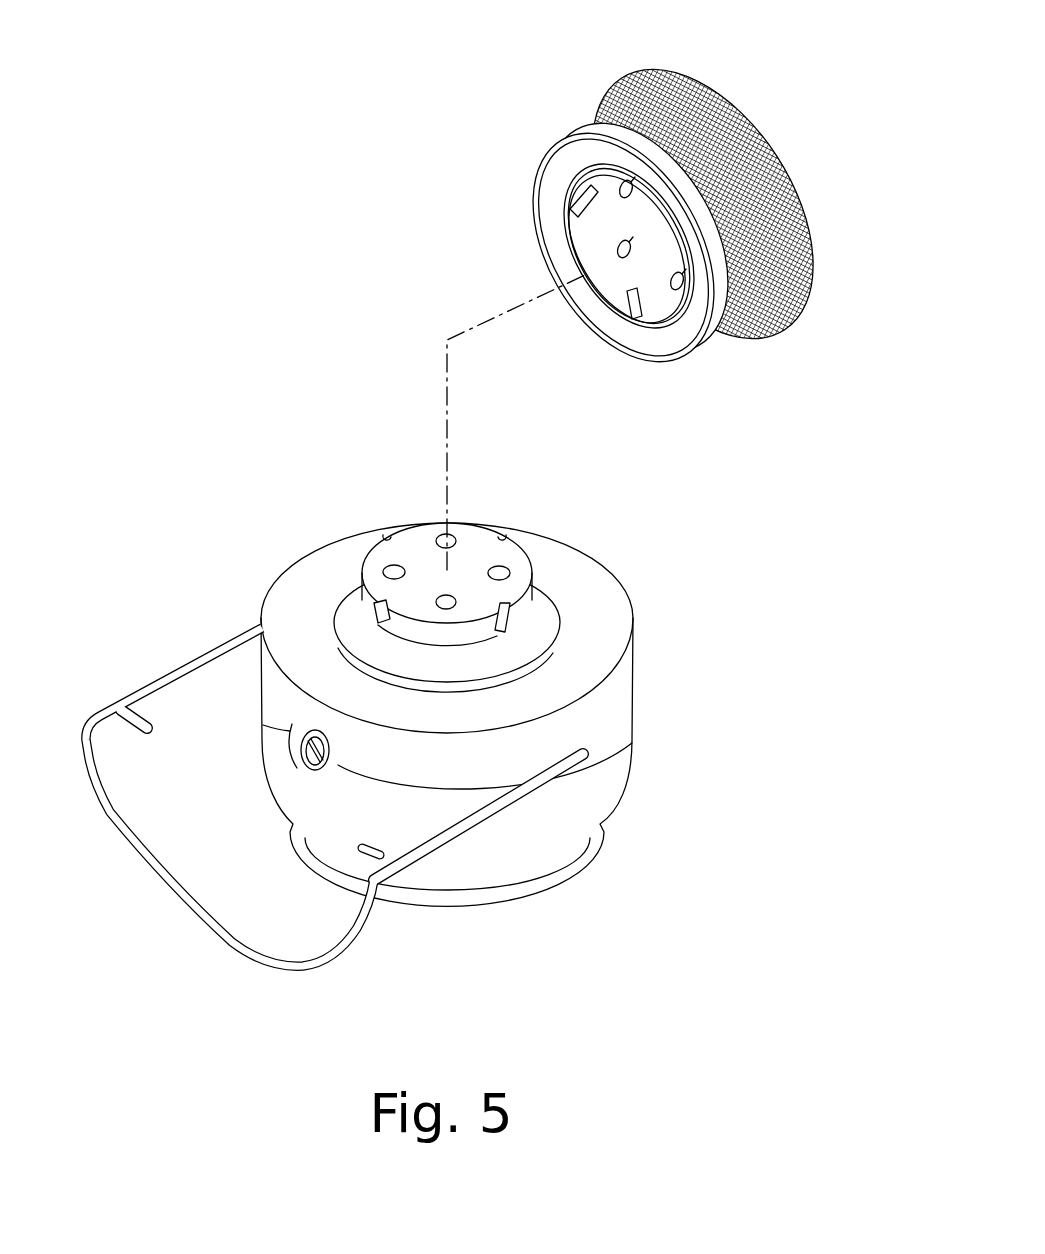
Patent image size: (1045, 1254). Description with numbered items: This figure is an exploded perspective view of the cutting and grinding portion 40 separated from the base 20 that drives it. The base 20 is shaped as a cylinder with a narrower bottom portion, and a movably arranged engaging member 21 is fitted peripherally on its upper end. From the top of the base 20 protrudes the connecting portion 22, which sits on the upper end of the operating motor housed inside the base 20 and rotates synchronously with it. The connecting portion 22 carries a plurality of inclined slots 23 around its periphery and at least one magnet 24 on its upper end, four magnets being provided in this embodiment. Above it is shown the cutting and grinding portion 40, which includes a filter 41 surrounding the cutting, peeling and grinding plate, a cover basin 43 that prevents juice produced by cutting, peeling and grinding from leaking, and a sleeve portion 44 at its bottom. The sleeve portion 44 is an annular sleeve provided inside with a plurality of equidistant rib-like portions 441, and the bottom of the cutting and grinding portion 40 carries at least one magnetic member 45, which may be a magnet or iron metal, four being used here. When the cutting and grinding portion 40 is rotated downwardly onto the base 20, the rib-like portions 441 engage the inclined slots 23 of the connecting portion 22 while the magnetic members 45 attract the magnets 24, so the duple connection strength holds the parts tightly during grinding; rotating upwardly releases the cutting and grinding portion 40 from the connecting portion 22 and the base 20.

The base 20 is at (404, 647).
The engaging member 21 is at (200, 948).
The connecting portion 22 is at (524, 577).
The inclined slots 23 is at (374, 612).
The magnet 24 is at (502, 568).
The cutting and grinding portion 40 is at (652, 218).
The filter 41 is at (721, 86).
The cover basin 43 is at (704, 334).
The sleeve portion 44 is at (577, 286).
The rib-like portions 441 is at (572, 204).
The magnetic member 45 is at (645, 236).